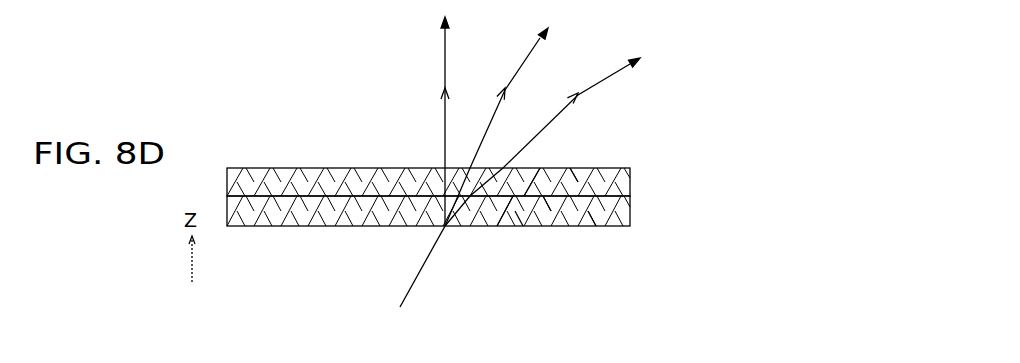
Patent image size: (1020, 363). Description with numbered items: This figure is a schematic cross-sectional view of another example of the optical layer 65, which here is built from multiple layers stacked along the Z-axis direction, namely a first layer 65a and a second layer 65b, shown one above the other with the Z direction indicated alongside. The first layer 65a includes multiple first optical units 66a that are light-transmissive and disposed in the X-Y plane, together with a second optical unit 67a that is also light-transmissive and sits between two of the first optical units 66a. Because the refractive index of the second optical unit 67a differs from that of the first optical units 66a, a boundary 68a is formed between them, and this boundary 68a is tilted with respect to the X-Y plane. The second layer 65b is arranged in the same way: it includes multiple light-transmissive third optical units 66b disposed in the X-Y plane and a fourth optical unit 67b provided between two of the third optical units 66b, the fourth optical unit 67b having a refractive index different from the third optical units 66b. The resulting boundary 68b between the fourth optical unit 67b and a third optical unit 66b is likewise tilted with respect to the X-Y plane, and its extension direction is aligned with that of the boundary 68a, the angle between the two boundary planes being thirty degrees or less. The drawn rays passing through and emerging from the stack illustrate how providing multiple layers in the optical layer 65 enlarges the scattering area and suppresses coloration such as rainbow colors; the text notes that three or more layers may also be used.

The optical layer 65 is at (499, 169).
The first layer 65a is at (644, 178).
The second layer 65b is at (644, 208).
The first optical units 66a is at (540, 168).
The third optical units 66b is at (503, 224).
The second optical unit 67a is at (548, 167).
The fourth optical unit 67b is at (533, 226).
The boundary 68a is at (592, 228).
The boundary 68b is at (523, 226).